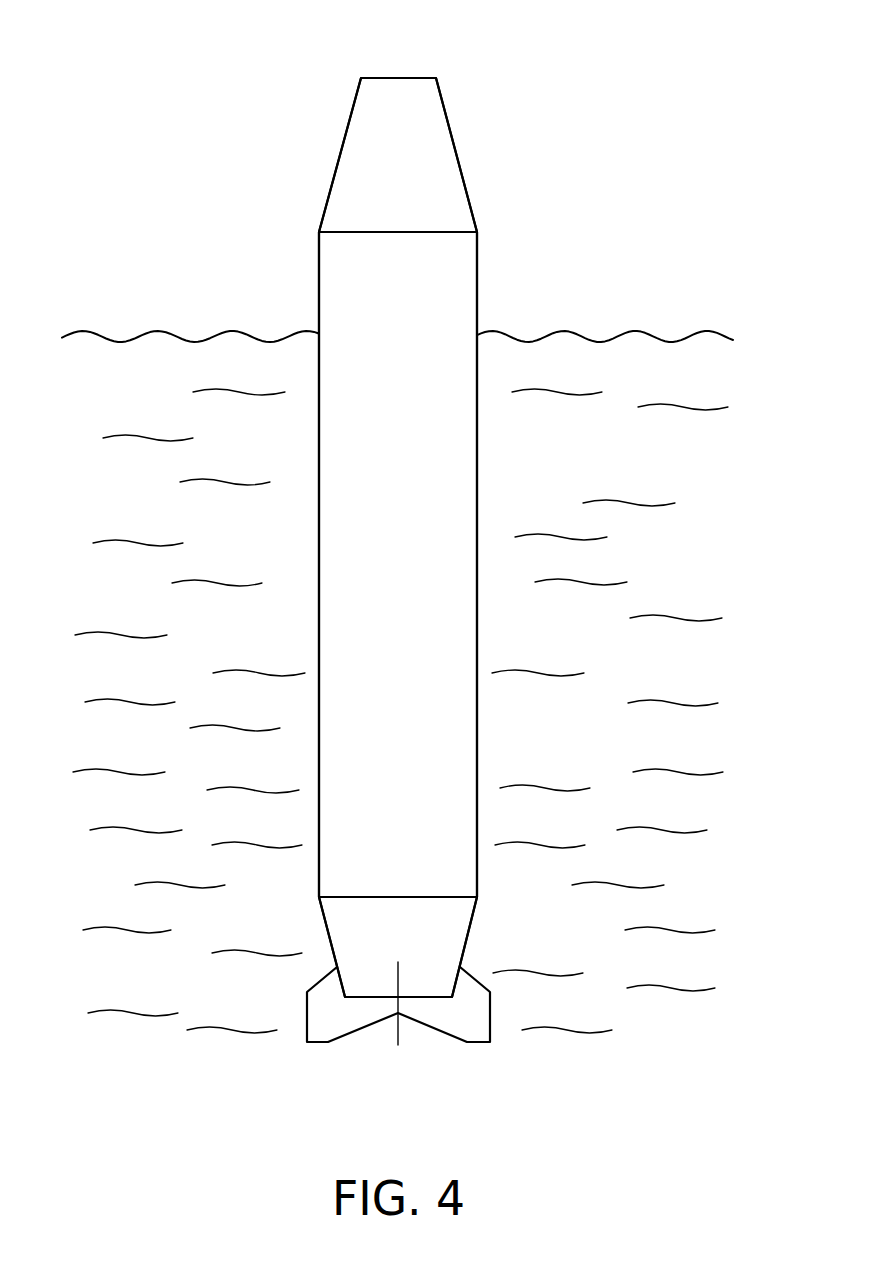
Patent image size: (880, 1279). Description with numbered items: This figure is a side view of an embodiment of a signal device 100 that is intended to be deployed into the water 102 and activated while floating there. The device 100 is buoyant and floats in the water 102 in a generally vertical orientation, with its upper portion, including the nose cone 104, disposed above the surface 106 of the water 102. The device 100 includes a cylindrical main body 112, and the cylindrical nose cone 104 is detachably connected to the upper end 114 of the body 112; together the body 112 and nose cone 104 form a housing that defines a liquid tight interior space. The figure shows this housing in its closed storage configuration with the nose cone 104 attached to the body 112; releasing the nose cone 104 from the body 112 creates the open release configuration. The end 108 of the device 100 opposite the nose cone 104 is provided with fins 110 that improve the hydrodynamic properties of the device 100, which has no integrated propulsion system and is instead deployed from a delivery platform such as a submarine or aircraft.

The signal device 100 is at (498, 63).
The water 102 is at (680, 466).
The nose cone 104 is at (457, 152).
The surface 106 is at (632, 331).
The end 108 is at (471, 930).
The fins 110 is at (473, 1033).
The main body 112 is at (319, 619).
The upper end 114 is at (470, 268).